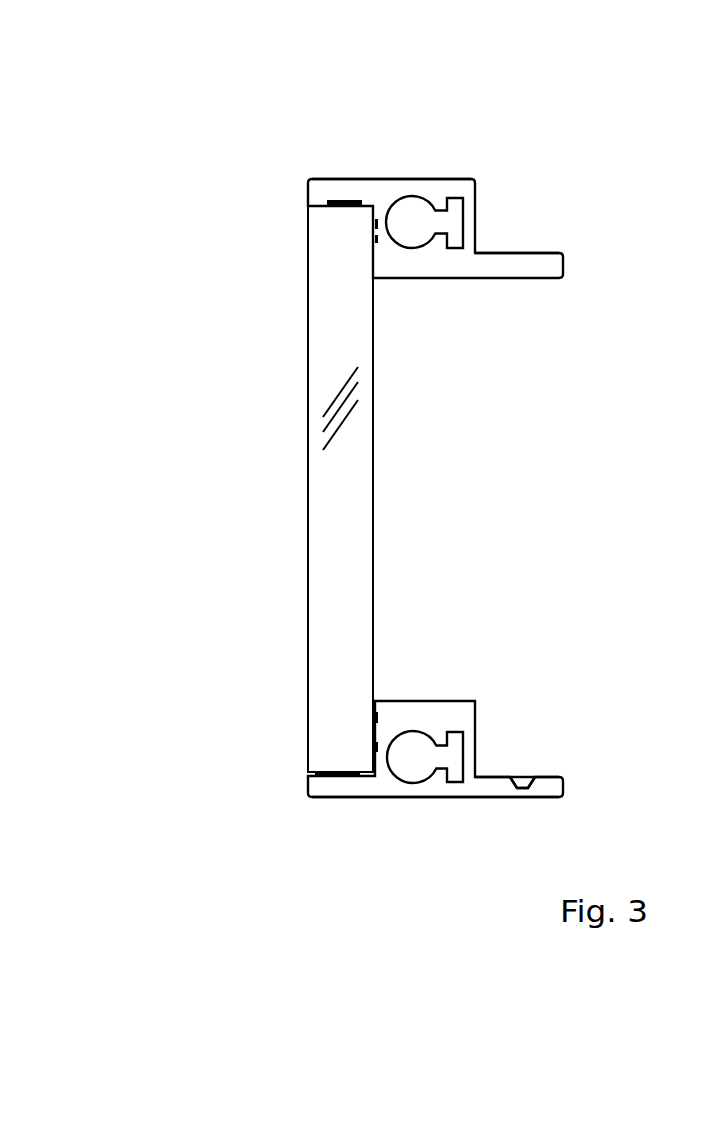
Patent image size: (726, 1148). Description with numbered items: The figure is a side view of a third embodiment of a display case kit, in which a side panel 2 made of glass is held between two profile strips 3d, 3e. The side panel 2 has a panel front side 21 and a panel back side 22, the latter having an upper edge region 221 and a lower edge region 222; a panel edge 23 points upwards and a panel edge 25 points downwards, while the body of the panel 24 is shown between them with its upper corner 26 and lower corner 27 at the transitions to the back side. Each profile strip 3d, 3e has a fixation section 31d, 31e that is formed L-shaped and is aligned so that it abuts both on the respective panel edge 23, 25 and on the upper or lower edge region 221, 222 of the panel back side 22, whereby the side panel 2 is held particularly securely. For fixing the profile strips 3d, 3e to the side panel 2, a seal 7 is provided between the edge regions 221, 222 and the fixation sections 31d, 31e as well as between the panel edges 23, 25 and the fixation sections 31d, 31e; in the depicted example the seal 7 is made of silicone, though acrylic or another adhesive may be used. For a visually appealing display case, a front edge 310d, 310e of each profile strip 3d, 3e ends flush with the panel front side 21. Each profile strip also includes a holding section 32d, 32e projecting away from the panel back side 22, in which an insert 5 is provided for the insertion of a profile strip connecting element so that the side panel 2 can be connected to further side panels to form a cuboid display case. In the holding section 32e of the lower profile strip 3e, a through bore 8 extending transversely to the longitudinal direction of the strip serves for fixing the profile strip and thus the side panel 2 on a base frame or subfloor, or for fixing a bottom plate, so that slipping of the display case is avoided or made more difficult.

The side panel 2 is at (308, 495).
The panel front side 21 is at (308, 602).
The panel back side 22 is at (375, 383).
The upper edge region 221 is at (377, 272).
The lower edge region 222 is at (375, 708).
The panel edge 23 is at (308, 207).
The panel body 24 is at (347, 495).
The panel edge 25 is at (313, 773).
The upper corner of panel 26 is at (368, 203).
The lower corner of panel 27 is at (310, 777).
The profile strip 3d is at (477, 207).
The profile strip 3e is at (478, 720).
The fixation section 31d is at (342, 195).
The fixation section 31e is at (358, 787).
The upper profile mounting flange 32d is at (517, 265).
The lower profile mounting flange 32e is at (543, 787).
The front edge 310d is at (308, 196).
The front edge 310e is at (307, 776).
The insert 5 is at (410, 218).
The seal 7 is at (352, 205).
The through bore 8 is at (523, 783).